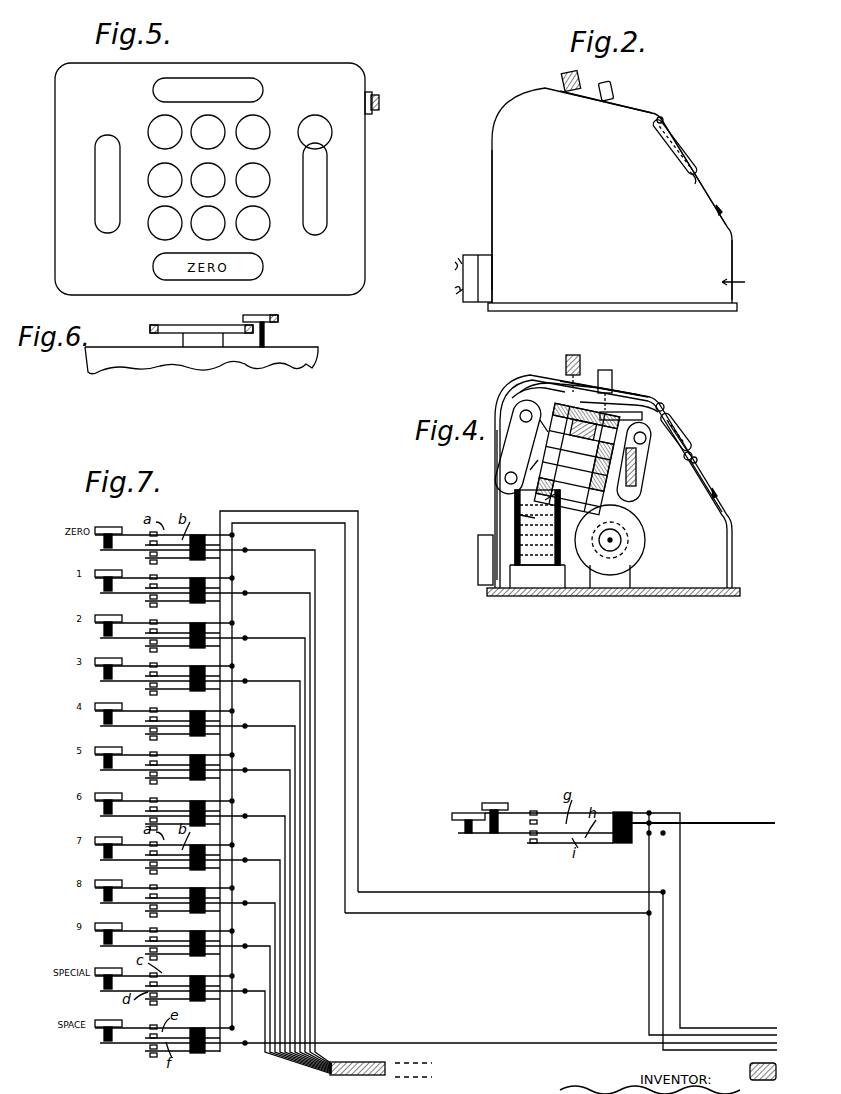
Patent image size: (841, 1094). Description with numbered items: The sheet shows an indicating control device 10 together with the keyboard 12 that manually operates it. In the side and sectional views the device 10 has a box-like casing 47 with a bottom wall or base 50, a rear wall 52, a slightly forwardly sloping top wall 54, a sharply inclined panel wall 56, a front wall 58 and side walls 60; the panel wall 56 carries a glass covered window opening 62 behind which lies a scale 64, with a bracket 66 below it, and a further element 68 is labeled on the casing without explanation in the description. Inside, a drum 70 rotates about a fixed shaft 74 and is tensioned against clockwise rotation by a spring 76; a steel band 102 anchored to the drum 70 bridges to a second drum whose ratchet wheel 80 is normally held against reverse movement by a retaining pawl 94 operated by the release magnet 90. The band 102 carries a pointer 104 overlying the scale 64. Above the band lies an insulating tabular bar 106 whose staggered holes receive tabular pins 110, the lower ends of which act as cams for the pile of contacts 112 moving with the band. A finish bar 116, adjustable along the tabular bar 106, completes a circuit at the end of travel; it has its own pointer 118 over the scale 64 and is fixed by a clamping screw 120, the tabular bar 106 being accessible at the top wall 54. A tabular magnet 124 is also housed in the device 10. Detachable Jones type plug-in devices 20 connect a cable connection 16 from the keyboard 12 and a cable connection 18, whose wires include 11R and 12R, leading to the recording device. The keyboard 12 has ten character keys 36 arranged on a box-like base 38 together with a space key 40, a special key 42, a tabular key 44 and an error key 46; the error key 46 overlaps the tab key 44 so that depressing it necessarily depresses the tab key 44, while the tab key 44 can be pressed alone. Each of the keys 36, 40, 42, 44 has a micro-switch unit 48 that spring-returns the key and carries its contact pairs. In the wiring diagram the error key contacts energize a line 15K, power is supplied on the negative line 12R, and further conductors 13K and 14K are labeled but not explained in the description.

In FIG. 2, the indicating control device 10 is at (616, 259).
In FIG. 4, the indicating control device 10 is at (762, 562).
In FIG. 5, the keyboard 12 is at (334, 274).
In FIG. 6, the keyboard 12 is at (140, 364).
In FIG. 7, the keyboard 12 is at (351, 948).
In FIG. 5, the cable connection 16 is at (377, 111).
In FIG. 2, the cable connection 16 is at (460, 290).
In FIG. 7, the cable connection 16 is at (380, 1076).
In FIG. 2, the cable connection 18 is at (460, 266).
In FIG. 7, the cable connection 18 is at (785, 1027).
In FIG. 2, the Jones type plug-in devices 20 is at (483, 303).
In FIG. 4, the Jones type plug-in devices 20 is at (483, 586).
In FIG. 5, the character keys 36 is at (266, 229).
In FIG. 7, the character keys 36 is at (96, 565).
In FIG. 5, the keyboard base 38 is at (365, 262).
In FIG. 6, the keyboard base 38 is at (298, 348).
In FIG. 5, the space key 40 is at (110, 139).
In FIG. 7, the space key 40 is at (100, 1036).
In FIG. 5, the special key 42 is at (265, 88).
In FIG. 7, the special key 42 is at (100, 982).
In FIG. 5, the tabular key 44 is at (327, 182).
In FIG. 6, the tabular key 44 is at (218, 314).
In FIG. 7, the tabular key 44 is at (456, 813).
In FIG. 5, the error key 46 is at (322, 118).
In FIG. 6, the error key 46 is at (278, 318).
In FIG. 7, the error key 46 is at (508, 808).
In FIG. 2, the casing 47 is at (743, 281).
In FIG. 7, the micro-switch unit 48 is at (164, 552).
In FIG. 2, the bottom wall 50 is at (656, 309).
In FIG. 4, the bottom wall 50 is at (663, 596).
In FIG. 4, the rear wall 52 is at (490, 501).
In FIG. 2, the top wall 54 is at (637, 111).
In FIG. 4, the top wall 54 is at (636, 392).
In FIG. 2, the panel wall 56 is at (662, 118).
In FIG. 4, the panel wall 56 is at (666, 406).
In FIG. 2, the front wall 58 is at (735, 258).
In FIG. 2, the side walls 60 is at (492, 207).
In FIG. 2, the window opening 62 is at (690, 147).
In FIG. 4, the window opening 62 is at (696, 432).
In FIG. 4, the scale 64 is at (698, 456).
In FIG. 2, the bracket 66 is at (724, 211).
In FIG. 4, the bracket 66 is at (719, 497).
In FIG. 2, the inclined wall 68 is at (705, 196).
In FIG. 4, the inclined wall 68 is at (708, 482).
In FIG. 4, the drum 70 is at (540, 440).
In FIG. 4, the fixed shaft 74 is at (552, 477).
In FIG. 4, the spring 76 is at (560, 495).
In FIG. 4, the ratchet wheel 80 is at (640, 456).
In FIG. 4, the release magnet 90 is at (645, 542).
In FIG. 4, the retaining pawl 94 is at (638, 472).
In FIG. 4, the steel band 102 is at (556, 400).
In FIG. 4, the pointer 104 is at (685, 422).
In FIG. 4, the tabular bar 106 is at (556, 380).
In FIG. 2, the tabular pins 110 is at (612, 96).
In FIG. 4, the tabular pins 110 is at (601, 368).
In FIG. 4, the contacts 112 is at (625, 419).
In FIG. 4, the finish bar 116 is at (534, 384).
In FIG. 4, the pointer 118 is at (655, 402).
In FIG. 2, the clamping screw 120 is at (562, 76).
In FIG. 4, the clamping screw 120 is at (566, 358).
In FIG. 4, the tabular magnet 124 is at (537, 539).
In FIG. 7, the wire 11R is at (357, 1043).
In FIG. 7, the negative power line 12R is at (400, 892).
In FIG. 7, the conductor 13K is at (397, 914).
In FIG. 7, the conductor 14K is at (766, 823).
In FIG. 7, the line 15K is at (680, 862).